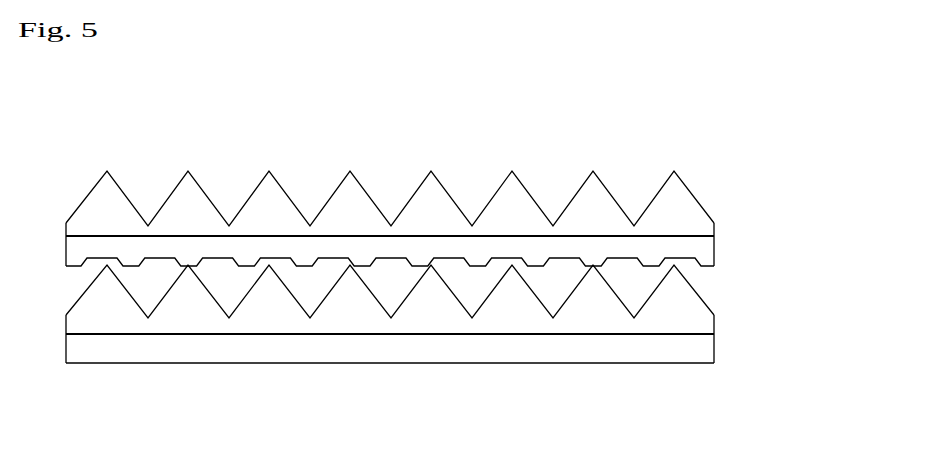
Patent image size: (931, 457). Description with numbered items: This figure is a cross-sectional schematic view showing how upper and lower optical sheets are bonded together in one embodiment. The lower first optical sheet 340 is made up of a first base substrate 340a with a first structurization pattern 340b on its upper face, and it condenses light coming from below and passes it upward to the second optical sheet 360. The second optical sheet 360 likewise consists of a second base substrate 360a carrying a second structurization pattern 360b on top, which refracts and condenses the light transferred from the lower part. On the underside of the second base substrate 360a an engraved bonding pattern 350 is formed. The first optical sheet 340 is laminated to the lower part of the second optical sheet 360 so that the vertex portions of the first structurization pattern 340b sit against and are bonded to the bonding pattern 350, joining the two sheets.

The first optical sheet 340 is at (716, 342).
The first base substrate 340a is at (415, 352).
The first structurization pattern 340b is at (508, 307).
The bonding pattern 350 is at (688, 264).
The second optical sheet 360 is at (716, 247).
The second base substrate 360a is at (518, 244).
The second structurization pattern 360b is at (442, 205).